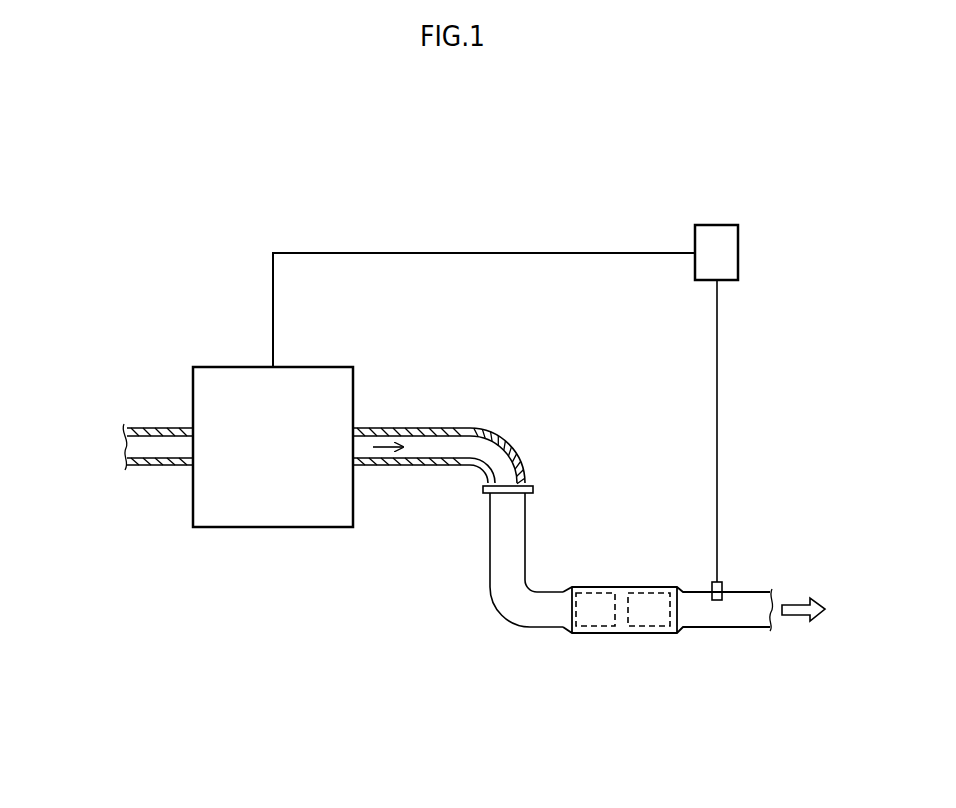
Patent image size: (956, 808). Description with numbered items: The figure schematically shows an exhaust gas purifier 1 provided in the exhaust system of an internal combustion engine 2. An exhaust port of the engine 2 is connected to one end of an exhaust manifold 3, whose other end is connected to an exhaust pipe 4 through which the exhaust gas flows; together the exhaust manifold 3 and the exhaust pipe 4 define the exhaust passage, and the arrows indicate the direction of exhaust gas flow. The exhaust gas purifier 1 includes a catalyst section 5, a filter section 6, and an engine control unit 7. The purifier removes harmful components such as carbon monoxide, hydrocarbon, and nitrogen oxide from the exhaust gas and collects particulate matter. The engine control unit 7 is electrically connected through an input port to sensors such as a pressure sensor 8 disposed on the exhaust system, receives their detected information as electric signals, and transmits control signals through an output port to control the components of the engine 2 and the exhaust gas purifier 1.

The exhaust gas purifier 1 is at (668, 612).
The internal combustion engine 2 is at (334, 356).
The exhaust manifold 3 is at (445, 428).
The exhaust pipe 4 is at (490, 538).
The catalyst section 5 is at (597, 590).
The filter section 6 is at (650, 590).
The engine control unit 7 is at (738, 243).
The pressure sensor 8 is at (717, 600).